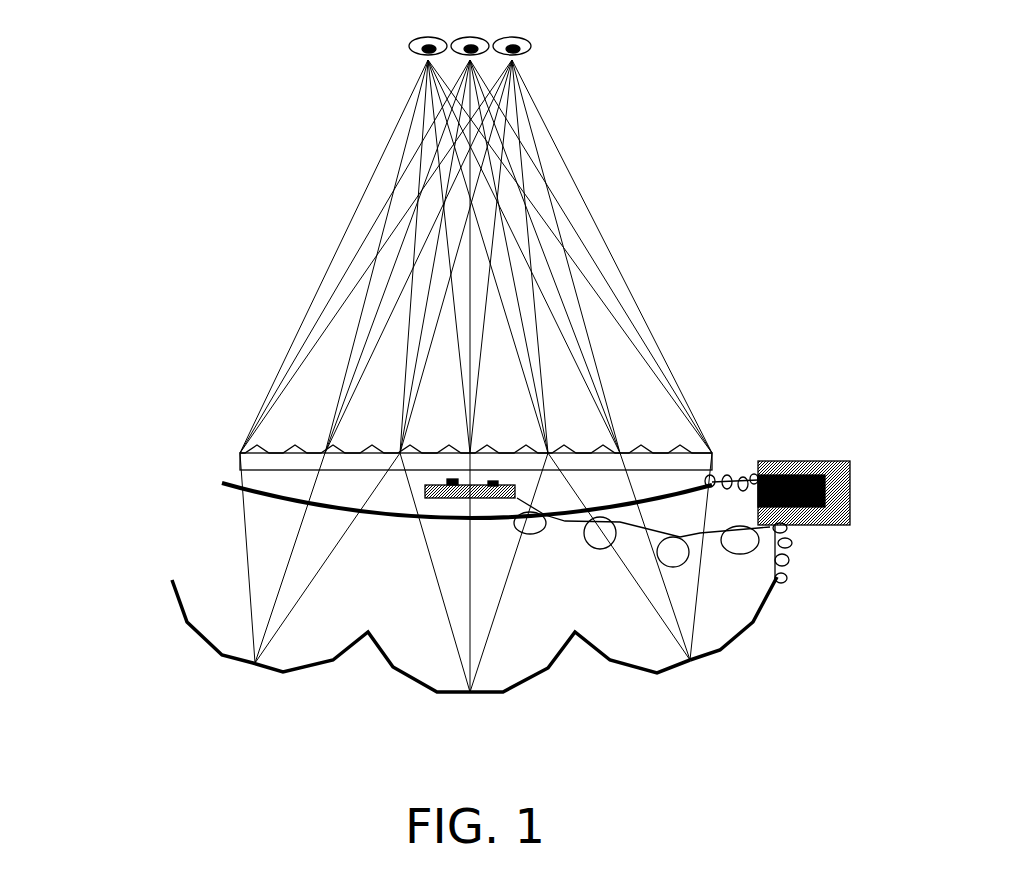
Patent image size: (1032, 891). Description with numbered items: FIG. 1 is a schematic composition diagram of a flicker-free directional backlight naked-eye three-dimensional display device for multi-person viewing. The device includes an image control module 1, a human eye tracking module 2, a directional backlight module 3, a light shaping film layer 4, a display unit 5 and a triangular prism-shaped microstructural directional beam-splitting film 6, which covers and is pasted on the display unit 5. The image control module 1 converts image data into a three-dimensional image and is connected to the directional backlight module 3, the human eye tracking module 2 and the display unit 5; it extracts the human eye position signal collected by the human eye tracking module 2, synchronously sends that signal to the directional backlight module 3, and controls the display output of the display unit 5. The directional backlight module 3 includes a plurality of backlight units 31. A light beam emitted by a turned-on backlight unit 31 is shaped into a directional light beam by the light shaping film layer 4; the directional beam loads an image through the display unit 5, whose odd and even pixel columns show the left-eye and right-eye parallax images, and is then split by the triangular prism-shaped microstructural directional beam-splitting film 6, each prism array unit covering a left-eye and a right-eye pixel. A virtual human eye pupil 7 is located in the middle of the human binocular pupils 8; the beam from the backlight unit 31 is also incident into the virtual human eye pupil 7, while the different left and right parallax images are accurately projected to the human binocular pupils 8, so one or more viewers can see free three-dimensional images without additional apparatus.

The image control module 1 is at (815, 461).
The human eye tracking module 2 is at (427, 483).
The directional backlight module 3 is at (525, 642).
The backlight unit 31 is at (722, 652).
The light shaping film layer 4 is at (225, 484).
The display unit 5 is at (240, 457).
The triangular prism-shaped microstructural directional beam-splitting film 6 is at (700, 440).
The virtual human eye pupil 7 is at (480, 38).
The human binocular pupils 8 is at (513, 38).